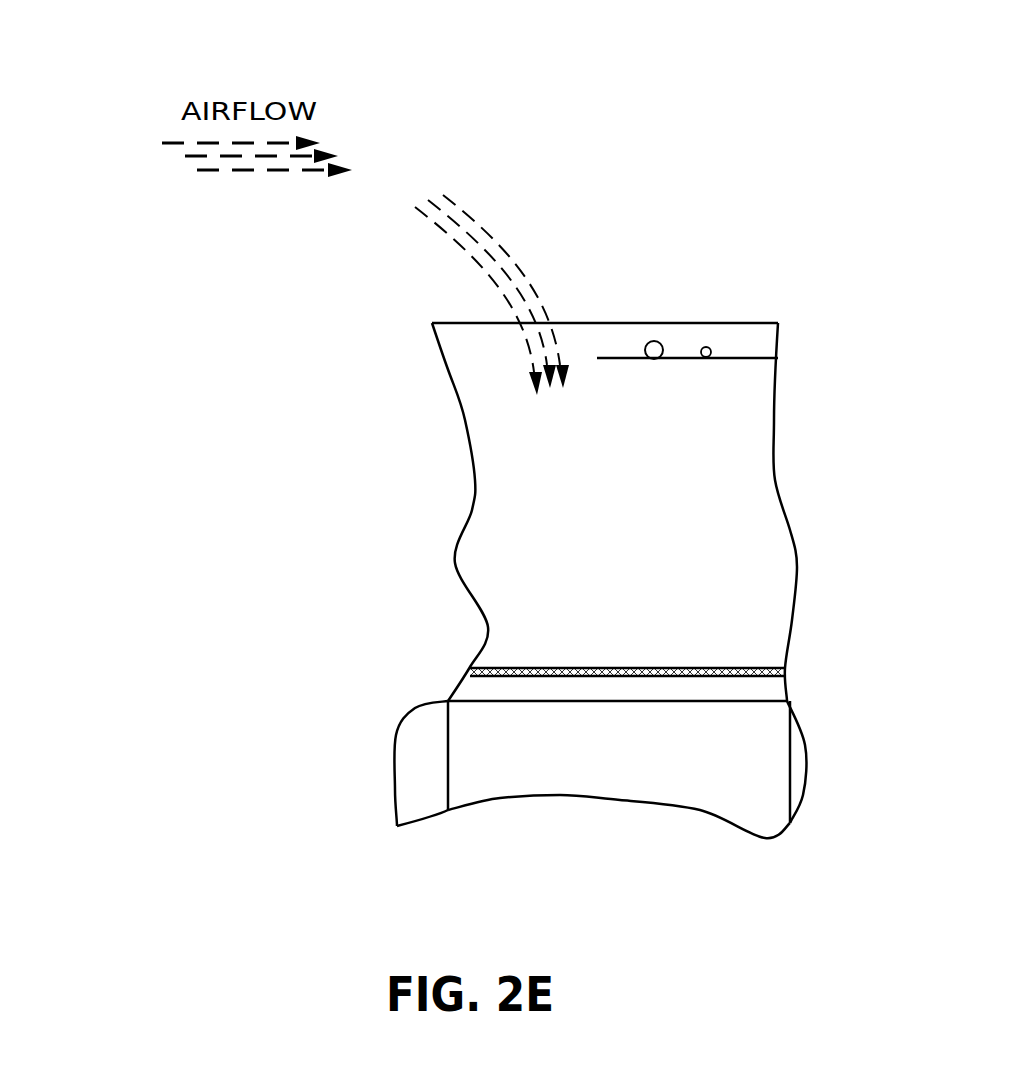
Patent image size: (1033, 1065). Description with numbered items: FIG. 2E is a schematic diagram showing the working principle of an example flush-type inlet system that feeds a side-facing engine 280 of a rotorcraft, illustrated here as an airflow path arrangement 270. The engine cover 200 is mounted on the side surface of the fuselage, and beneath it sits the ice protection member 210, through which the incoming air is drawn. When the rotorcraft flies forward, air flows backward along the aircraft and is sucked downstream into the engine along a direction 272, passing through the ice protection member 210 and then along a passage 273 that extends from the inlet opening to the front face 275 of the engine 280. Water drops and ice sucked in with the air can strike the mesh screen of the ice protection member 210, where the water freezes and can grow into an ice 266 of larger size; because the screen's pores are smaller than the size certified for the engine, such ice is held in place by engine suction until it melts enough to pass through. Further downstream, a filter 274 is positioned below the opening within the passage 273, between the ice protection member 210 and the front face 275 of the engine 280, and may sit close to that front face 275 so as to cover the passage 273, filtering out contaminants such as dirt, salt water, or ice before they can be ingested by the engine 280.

The airflow path arrangement 270 is at (70, 62).
The direction 272 is at (482, 278).
The engine cover 200 is at (752, 310).
The ice protection member 210 is at (758, 350).
The ice 266 is at (660, 359).
The passage 273 is at (673, 527).
The filter 274 is at (715, 667).
The front face 275 is at (765, 696).
The side-facing engine 280 is at (765, 772).